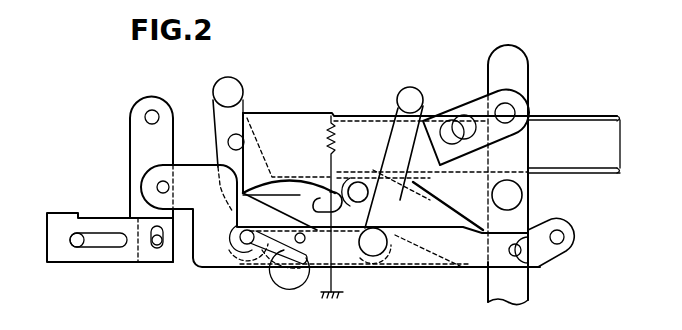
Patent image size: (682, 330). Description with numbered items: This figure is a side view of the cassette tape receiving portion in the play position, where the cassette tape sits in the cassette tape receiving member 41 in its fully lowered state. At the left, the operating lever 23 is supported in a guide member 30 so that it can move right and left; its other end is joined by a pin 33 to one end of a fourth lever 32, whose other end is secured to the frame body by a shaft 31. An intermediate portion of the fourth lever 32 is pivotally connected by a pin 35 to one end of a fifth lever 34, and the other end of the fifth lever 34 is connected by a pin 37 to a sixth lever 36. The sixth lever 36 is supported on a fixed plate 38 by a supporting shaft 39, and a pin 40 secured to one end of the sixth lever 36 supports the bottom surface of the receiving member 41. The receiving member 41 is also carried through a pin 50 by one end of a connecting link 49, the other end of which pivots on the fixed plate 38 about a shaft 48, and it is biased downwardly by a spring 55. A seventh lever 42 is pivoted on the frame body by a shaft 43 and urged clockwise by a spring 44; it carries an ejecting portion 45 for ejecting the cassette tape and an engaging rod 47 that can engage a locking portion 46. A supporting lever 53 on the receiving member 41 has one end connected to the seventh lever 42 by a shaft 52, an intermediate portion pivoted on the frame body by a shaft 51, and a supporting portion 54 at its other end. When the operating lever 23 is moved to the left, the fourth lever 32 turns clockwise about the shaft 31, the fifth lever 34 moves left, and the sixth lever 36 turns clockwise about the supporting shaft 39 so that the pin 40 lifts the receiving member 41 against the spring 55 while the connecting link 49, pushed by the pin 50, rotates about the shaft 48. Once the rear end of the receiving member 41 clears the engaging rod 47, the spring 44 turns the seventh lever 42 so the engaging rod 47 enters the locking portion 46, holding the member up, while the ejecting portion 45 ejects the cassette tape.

The operating lever 23 is at (68, 218).
The guide member 30 is at (78, 247).
The shaft 31 is at (152, 110).
The fourth lever 32 is at (130, 135).
The pin 33 is at (157, 246).
The fifth lever 34 is at (222, 268).
The pin 35 is at (157, 188).
The sixth lever 36 is at (450, 221).
The pin 37 is at (525, 268).
The fixed plate 38 is at (515, 70).
The supporting shaft 39 is at (512, 193).
The pin 40 is at (354, 183).
The cassette tape receiving member 41 is at (363, 114).
The seventh lever 42 is at (215, 110).
The shaft 43 is at (302, 248).
The spring 44 is at (267, 262).
The ejecting portion 45 is at (233, 91).
The locking portion 46 is at (306, 182).
The engaging rod 47 is at (228, 143).
The shaft 48 is at (506, 113).
The connecting link 49 is at (470, 102).
The pin 50 is at (454, 125).
The shaft 51 is at (383, 252).
The shaft 52 is at (240, 236).
The supporting lever 53 is at (410, 195).
The supporting portion 54 is at (411, 92).
The spring 55 is at (333, 288).